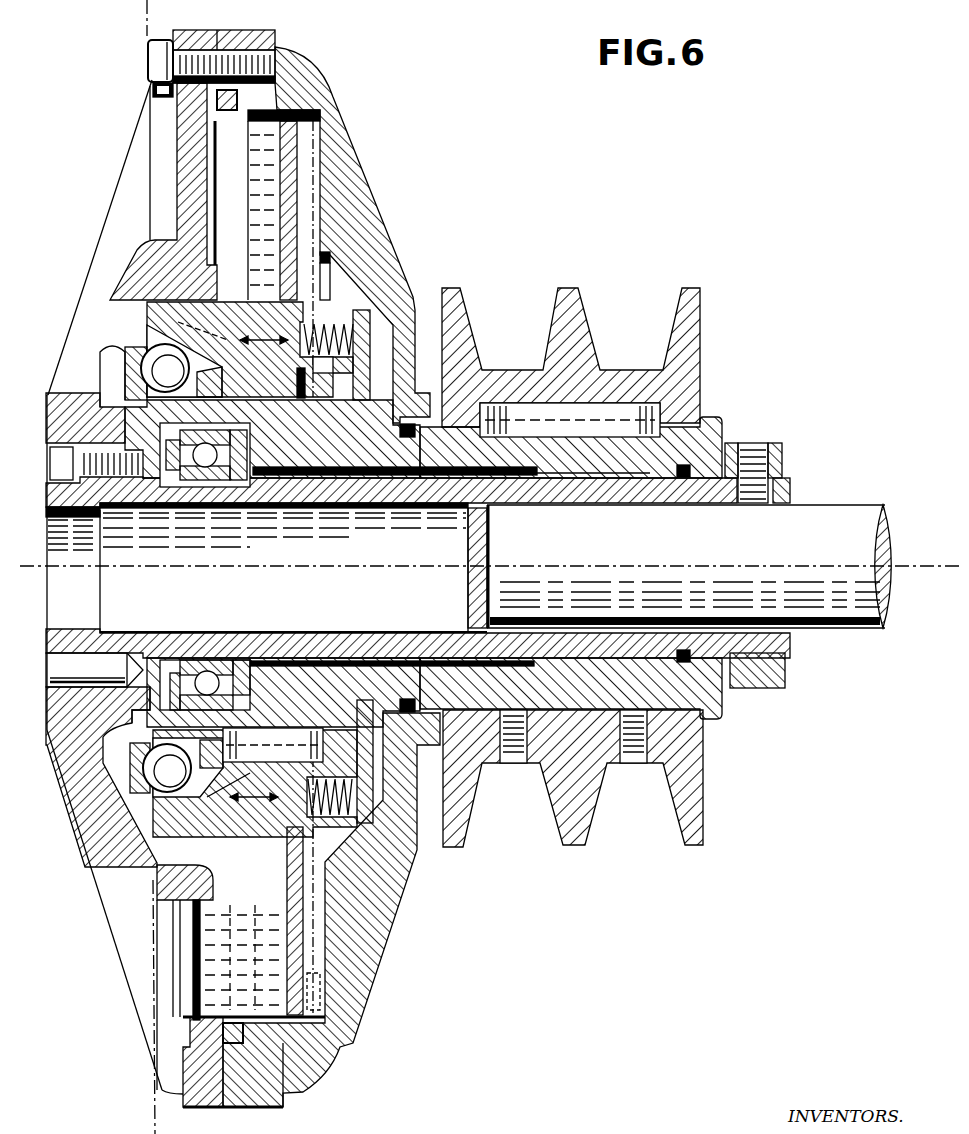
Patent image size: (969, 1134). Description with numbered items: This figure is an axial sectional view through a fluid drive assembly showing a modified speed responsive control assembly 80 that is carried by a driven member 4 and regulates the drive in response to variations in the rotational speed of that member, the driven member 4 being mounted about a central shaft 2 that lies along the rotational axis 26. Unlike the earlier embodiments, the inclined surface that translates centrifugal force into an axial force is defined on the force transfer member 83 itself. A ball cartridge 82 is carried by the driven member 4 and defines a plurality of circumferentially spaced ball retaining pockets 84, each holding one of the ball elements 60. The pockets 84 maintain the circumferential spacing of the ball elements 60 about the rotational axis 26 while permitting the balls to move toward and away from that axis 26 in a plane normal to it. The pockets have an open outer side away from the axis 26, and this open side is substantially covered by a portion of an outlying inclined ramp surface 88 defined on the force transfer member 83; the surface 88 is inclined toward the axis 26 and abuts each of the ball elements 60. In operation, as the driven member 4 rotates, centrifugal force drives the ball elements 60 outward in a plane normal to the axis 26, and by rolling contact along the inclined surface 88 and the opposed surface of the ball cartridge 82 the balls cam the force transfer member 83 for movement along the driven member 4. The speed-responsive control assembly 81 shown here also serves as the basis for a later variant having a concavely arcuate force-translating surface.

The shaft 2 is at (790, 491).
The driven member 4 is at (717, 420).
The rotational axis 26 is at (274, 566).
The ball elements 60 is at (150, 362).
The speed responsive control assembly 80 is at (414, 186).
The control assembly 81 is at (228, 292).
The ball cartridge 82 is at (141, 386).
The force transfer member 83 is at (287, 147).
The ball retaining pockets 84 is at (140, 745).
The inclined ramp surface 88 is at (97, 313).